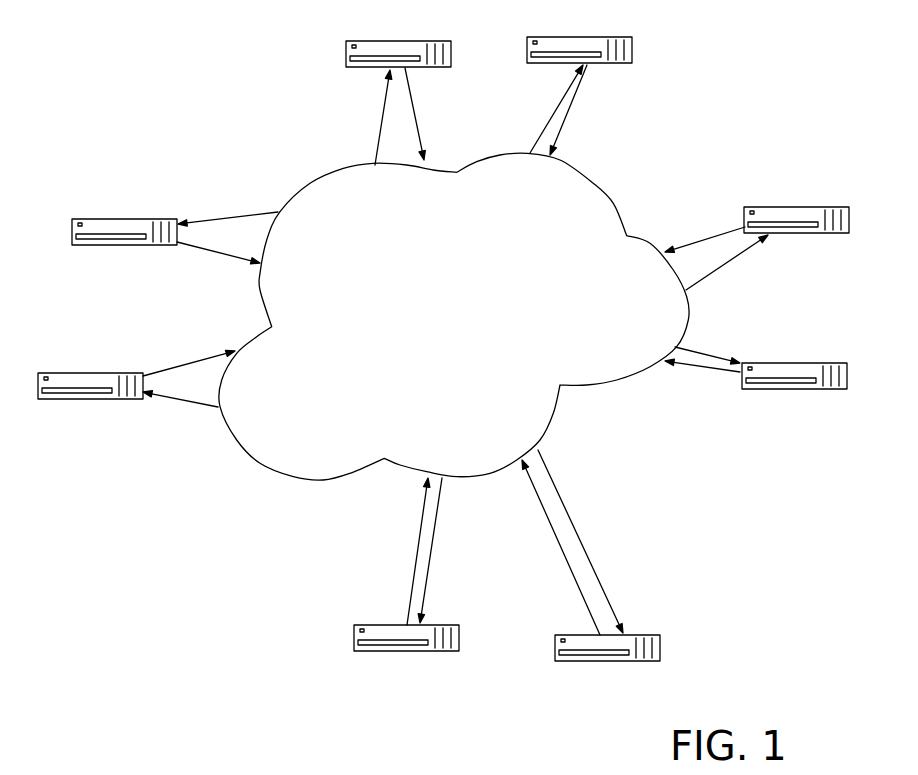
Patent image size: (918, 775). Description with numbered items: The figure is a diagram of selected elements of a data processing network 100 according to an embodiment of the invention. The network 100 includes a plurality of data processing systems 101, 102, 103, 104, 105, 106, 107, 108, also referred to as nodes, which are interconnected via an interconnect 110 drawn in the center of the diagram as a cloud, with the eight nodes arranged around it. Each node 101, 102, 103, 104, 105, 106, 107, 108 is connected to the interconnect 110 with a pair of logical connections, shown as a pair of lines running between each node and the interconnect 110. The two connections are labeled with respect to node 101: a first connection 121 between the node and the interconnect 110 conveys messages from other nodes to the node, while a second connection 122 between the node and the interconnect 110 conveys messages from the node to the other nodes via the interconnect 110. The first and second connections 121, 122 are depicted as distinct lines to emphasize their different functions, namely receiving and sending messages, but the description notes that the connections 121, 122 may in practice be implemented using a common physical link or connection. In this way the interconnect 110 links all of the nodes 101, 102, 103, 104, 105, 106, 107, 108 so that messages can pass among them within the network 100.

The data processing network 100 is at (717, 613).
The data processing system 101 is at (633, 50).
The data processing system 102 is at (453, 52).
The data processing system 103 is at (72, 230).
The data processing system 104 is at (38, 380).
The data processing system 105 is at (367, 652).
The data processing system 106 is at (578, 660).
The data processing system 107 is at (801, 389).
The data processing system 108 is at (811, 233).
The interconnect 110 is at (471, 323).
The first connection 121 is at (548, 112).
The second connection 122 is at (574, 107).